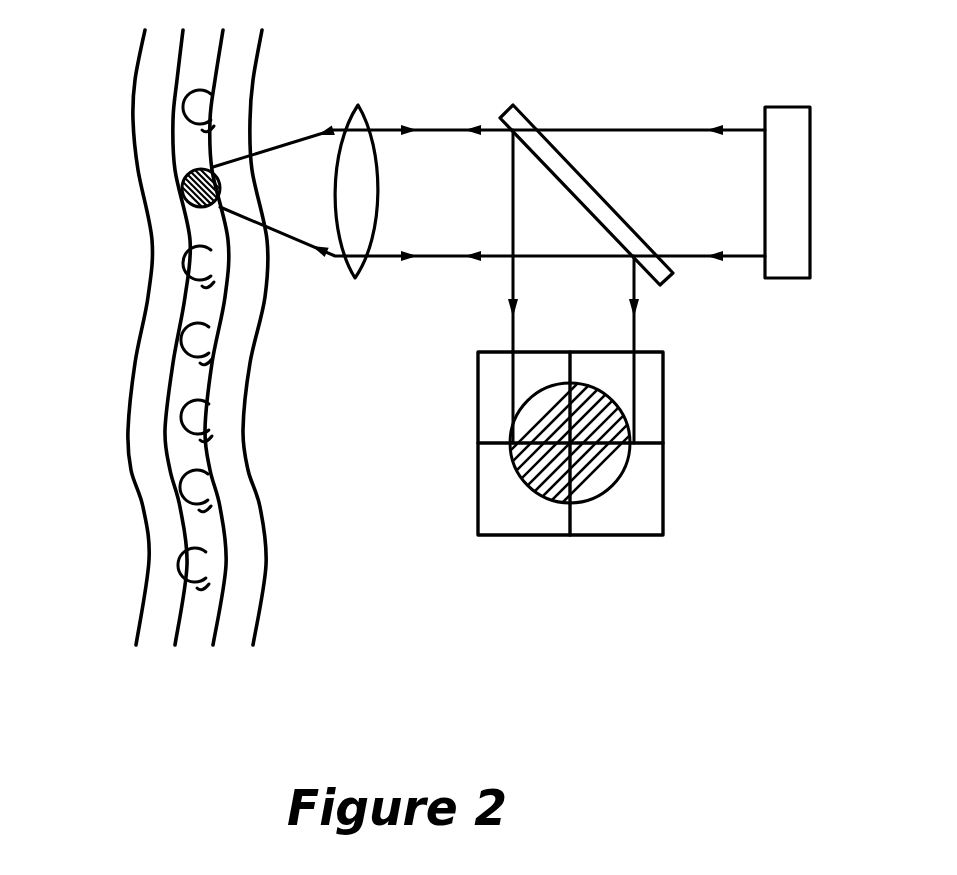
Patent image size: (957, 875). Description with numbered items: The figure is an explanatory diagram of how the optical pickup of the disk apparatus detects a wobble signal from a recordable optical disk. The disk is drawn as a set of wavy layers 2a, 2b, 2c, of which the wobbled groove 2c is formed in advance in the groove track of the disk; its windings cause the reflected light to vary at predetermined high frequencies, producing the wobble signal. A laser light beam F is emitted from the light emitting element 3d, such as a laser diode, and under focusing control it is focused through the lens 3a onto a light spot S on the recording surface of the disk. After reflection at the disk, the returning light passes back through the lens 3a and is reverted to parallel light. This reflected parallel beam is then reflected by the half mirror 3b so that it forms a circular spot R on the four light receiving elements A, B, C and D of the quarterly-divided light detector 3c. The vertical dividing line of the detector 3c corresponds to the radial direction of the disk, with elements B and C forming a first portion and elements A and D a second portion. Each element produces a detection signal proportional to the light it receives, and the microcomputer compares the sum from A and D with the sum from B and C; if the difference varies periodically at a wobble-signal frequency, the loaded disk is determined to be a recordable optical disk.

The outer layers of the blood vessel wall 2a is at (160, 502).
The blood flow with blood cells 2b is at (207, 302).
The wobble groove 2c is at (170, 118).
The light spot S is at (187, 200).
The laser light beam F is at (650, 130).
The lens 3a is at (360, 100).
The half mirror 3b is at (513, 105).
The quarterly-divided light detector 3c is at (575, 482).
The light emitting element 3d is at (800, 192).
The circular spot R is at (540, 493).